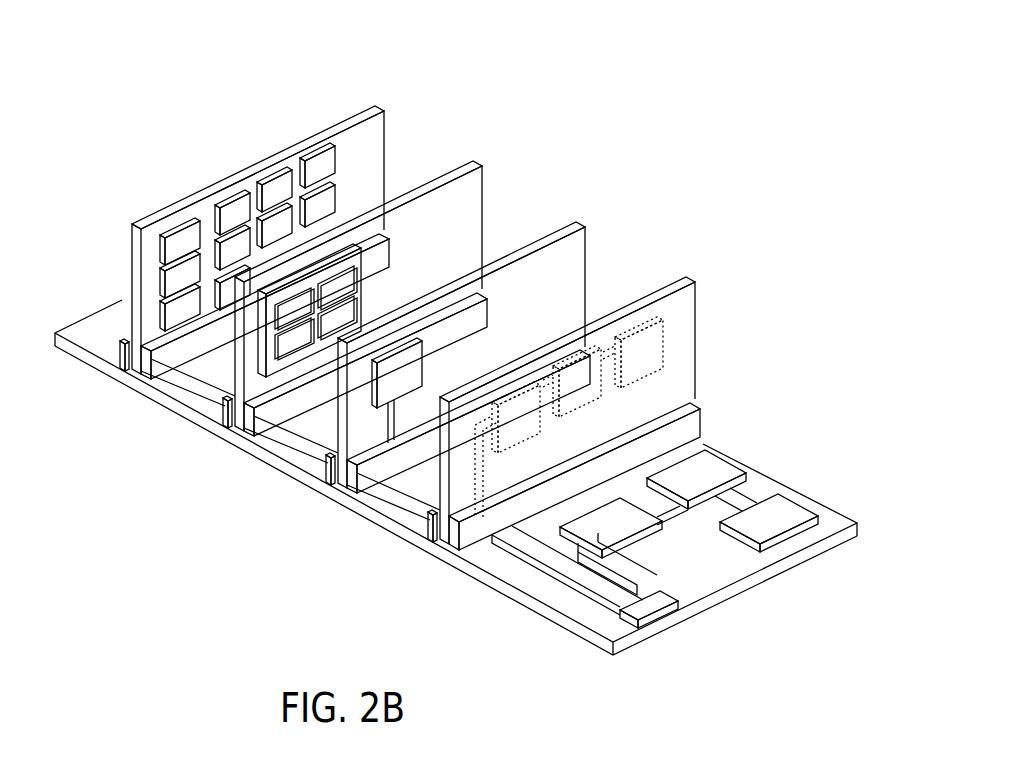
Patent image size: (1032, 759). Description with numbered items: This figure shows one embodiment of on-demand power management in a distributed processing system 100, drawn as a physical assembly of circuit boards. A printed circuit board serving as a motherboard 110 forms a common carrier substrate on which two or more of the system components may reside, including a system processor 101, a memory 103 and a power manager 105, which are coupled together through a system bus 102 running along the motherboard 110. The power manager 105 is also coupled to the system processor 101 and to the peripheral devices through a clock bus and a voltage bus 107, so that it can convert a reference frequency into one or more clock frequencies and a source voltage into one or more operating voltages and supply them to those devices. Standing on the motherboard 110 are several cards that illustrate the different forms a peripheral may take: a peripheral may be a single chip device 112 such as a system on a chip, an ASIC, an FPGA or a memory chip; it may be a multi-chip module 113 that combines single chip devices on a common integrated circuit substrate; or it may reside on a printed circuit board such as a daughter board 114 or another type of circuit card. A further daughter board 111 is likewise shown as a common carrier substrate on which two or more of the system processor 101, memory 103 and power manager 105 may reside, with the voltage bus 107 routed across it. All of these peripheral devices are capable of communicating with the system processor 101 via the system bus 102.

The processing system 100 is at (462, 347).
The system processor 101 is at (613, 520).
The system bus 102 is at (520, 547).
The memory 103 is at (660, 367).
The power manager 105 is at (600, 396).
The voltage bus 107 is at (534, 433).
The motherboard 110 is at (723, 572).
The daughter board 111 is at (680, 308).
The single chip device 112 is at (415, 350).
The multi-chip module 113 is at (275, 327).
The daughter board 114 is at (367, 138).